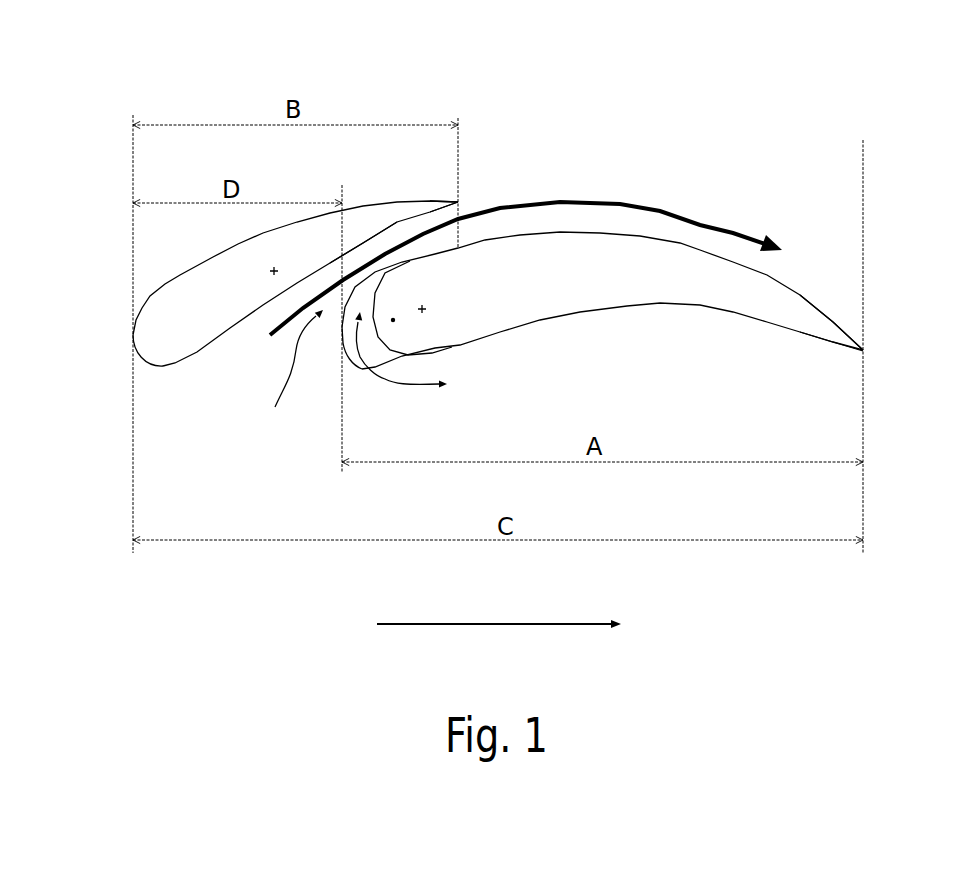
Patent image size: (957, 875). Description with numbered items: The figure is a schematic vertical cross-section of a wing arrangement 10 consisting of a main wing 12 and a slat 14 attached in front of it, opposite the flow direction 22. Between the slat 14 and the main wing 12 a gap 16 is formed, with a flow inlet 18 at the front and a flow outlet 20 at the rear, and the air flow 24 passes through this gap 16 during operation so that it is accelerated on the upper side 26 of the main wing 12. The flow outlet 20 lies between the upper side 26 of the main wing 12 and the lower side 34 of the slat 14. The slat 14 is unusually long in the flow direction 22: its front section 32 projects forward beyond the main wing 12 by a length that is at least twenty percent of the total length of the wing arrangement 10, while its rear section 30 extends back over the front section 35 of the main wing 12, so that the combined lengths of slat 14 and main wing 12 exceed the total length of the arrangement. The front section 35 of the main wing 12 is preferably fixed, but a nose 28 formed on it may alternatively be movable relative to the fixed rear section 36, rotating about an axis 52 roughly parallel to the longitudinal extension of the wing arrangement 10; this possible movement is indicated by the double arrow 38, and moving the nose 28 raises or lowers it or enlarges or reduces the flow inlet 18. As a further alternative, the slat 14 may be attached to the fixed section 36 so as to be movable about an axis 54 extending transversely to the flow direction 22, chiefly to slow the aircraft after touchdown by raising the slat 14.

The wing arrangement 10 is at (686, 74).
The main wing 12 is at (566, 305).
The slat 14 is at (281, 285).
The gap 16 is at (427, 220).
The flow inlet 18 is at (291, 374).
The flow outlet 20 is at (452, 211).
The flow direction 22 is at (522, 624).
The air flow 24 is at (377, 248).
The upper side of the main wing 26 is at (587, 232).
The nose of the main wing 28 is at (353, 350).
The rear section of the slat 30 is at (407, 213).
The front section of the slat 32 is at (182, 337).
The lower side of the slat 34 is at (237, 333).
The front section of the main wing 35 is at (396, 320).
The fixed rear section of the main wing 36 is at (772, 290).
The double arrow 38 is at (423, 388).
The axis of rotation 52 is at (427, 309).
The axis 54 is at (270, 271).